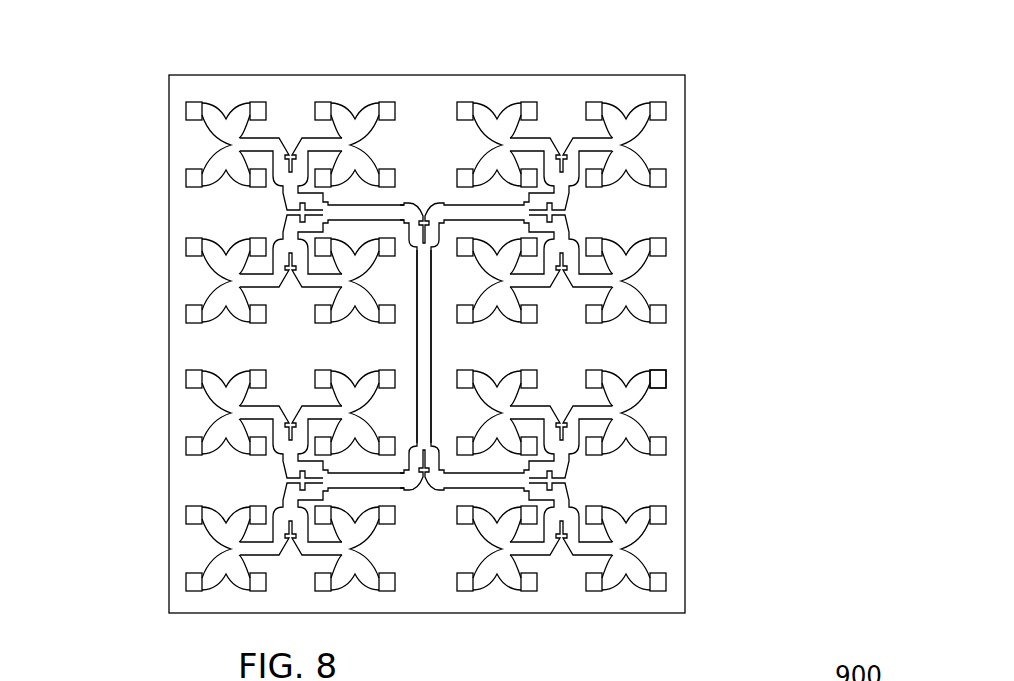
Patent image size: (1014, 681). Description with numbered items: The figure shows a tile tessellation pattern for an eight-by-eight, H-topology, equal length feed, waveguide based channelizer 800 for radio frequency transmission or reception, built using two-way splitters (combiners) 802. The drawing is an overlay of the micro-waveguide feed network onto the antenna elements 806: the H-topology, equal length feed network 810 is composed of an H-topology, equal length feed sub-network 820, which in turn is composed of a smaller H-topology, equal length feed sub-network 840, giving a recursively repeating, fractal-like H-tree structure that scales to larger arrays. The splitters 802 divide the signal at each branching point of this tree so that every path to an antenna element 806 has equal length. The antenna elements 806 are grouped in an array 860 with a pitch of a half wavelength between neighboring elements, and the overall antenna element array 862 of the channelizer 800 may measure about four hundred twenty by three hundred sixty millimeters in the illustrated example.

The waveguide based channelizer 800 is at (438, 339).
The two-way splitter 802 is at (425, 203).
The antenna element 806 is at (667, 371).
The H-topology equal length feed network 810 is at (398, 323).
The H-topology equal length feed sub-network 820 is at (349, 212).
The H-topology equal length feed sub-network 840 is at (349, 144).
The array of antenna elements 860 is at (695, 368).
The antenna element array 862 is at (678, 616).